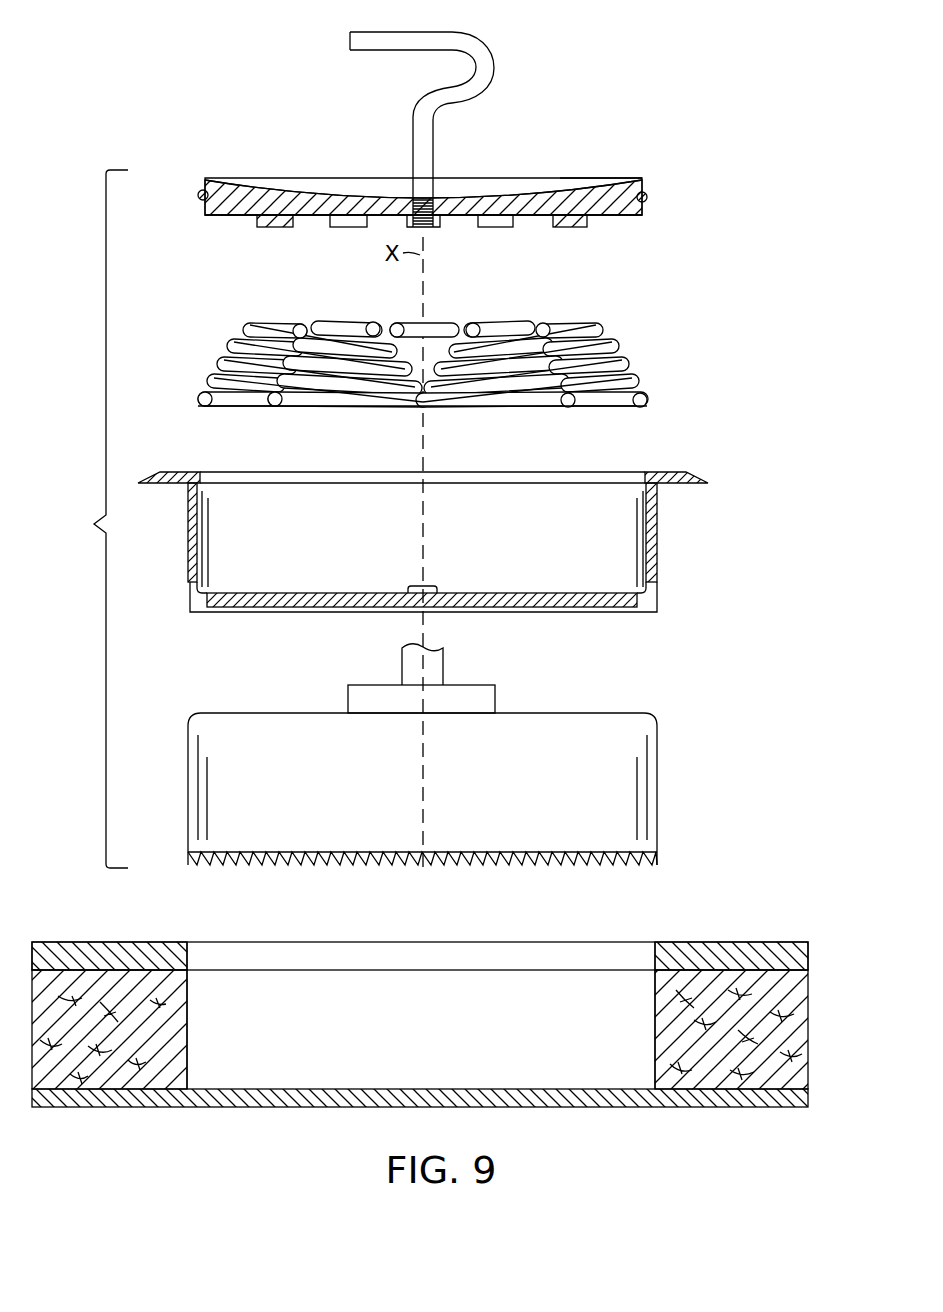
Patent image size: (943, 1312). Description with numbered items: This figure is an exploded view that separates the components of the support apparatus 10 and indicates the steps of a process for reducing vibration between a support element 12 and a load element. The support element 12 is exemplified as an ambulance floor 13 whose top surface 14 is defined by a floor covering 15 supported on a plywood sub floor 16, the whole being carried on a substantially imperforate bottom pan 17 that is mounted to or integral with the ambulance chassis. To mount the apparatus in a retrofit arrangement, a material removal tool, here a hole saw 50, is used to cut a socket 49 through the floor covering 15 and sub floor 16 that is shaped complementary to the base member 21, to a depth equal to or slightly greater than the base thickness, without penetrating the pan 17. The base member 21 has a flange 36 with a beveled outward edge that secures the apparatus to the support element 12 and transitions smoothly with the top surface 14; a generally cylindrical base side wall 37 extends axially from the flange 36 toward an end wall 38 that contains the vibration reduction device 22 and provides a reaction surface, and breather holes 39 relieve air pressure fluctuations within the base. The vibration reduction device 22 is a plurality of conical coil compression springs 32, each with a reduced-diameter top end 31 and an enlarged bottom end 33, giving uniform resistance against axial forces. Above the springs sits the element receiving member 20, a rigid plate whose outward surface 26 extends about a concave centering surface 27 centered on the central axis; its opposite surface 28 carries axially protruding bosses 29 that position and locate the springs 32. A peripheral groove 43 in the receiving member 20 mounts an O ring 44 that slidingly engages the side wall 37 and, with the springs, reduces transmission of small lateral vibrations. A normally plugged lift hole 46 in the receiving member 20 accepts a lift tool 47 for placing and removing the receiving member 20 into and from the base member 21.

The support apparatus 10 is at (743, 128).
The support element 12 is at (437, 1020).
The ambulance floor 13 is at (749, 930).
The top surface 14 is at (513, 943).
The floor covering 15 is at (690, 945).
The sub floor 16 is at (665, 1022).
The bottom pan 17 is at (588, 1093).
The element receiving member 20 is at (447, 149).
The base member 21 is at (431, 543).
The vibration reduction device 22 is at (441, 361).
The outward surface 26 is at (637, 178).
The concave centering surface 27 is at (525, 188).
The surface 28 is at (622, 218).
The bosses 29 is at (570, 222).
The top ends 31 is at (533, 323).
The conical coil compression springs 32 is at (573, 336).
The bottom ends 33 is at (640, 408).
The flange 36 is at (171, 472).
The base side wall 37 is at (204, 531).
The end wall 38 is at (447, 596).
The breather holes 39 is at (657, 602).
The peripheral groove 43 is at (650, 198).
The O ring 44 is at (618, 182).
The lift hole 46 is at (436, 198).
The lift tool 47 is at (492, 62).
The socket 49 is at (303, 1070).
The hole saw 50 is at (615, 728).